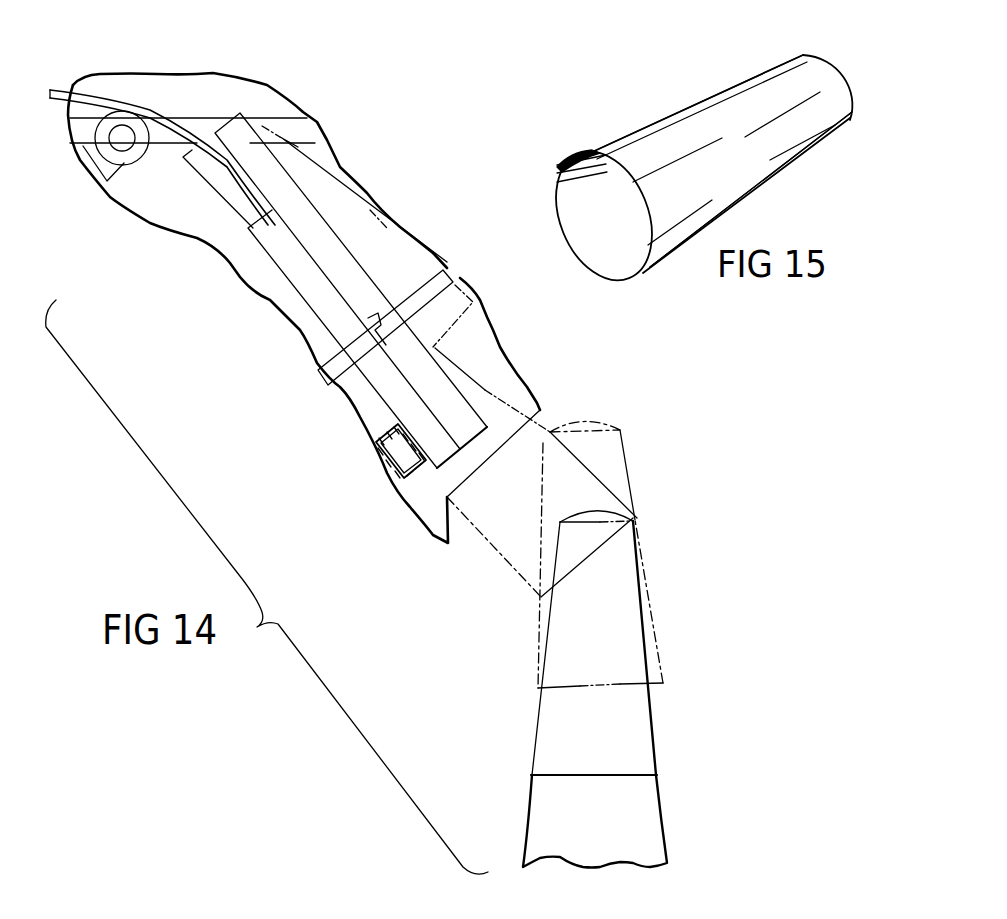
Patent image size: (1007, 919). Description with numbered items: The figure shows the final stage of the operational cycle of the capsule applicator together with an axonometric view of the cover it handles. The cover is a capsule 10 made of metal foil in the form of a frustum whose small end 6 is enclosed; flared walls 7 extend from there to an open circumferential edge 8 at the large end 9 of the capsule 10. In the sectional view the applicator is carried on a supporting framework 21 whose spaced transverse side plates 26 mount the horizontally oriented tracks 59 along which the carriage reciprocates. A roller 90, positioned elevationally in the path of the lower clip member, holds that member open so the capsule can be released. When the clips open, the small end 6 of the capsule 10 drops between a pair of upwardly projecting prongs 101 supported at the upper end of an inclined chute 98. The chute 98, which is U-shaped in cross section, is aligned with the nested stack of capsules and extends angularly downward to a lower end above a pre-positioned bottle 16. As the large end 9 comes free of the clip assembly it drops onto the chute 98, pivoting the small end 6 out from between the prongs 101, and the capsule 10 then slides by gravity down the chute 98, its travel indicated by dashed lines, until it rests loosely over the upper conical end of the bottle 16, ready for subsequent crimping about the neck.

In FIG. 14, the small end 6 is at (635, 520).
In FIG. 15, the small end 6 is at (822, 56).
In FIG. 15, the flared walls 7 is at (757, 178).
In FIG. 15, the open circumferential edge 8 is at (557, 167).
In FIG. 14, the large end 9 is at (650, 767).
In FIG. 15, the large end 9 is at (591, 148).
In FIG. 14, the capsule 10 is at (655, 596).
In FIG. 15, the capsule 10 is at (670, 101).
In FIG. 14, the bottle 16 is at (647, 807).
In FIG. 14, the supporting framework 21 is at (233, 267).
In FIG. 14, the side plates 26 is at (281, 312).
In FIG. 14, the tracks 59 is at (302, 129).
In FIG. 14, the roller 90 is at (127, 158).
In FIG. 14, the chute 98 is at (352, 270).
In FIG. 14, the prongs 101 is at (129, 101).